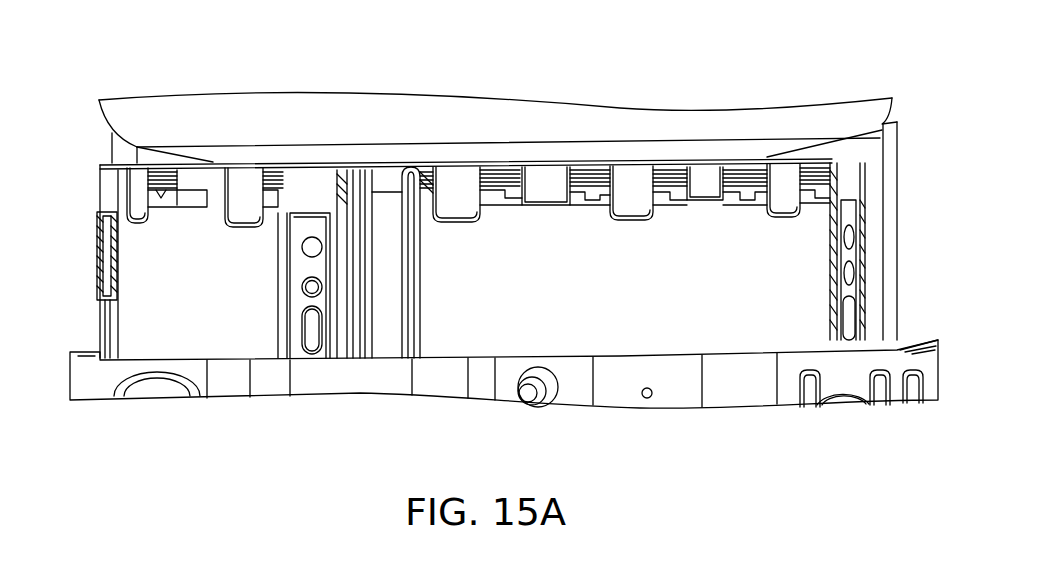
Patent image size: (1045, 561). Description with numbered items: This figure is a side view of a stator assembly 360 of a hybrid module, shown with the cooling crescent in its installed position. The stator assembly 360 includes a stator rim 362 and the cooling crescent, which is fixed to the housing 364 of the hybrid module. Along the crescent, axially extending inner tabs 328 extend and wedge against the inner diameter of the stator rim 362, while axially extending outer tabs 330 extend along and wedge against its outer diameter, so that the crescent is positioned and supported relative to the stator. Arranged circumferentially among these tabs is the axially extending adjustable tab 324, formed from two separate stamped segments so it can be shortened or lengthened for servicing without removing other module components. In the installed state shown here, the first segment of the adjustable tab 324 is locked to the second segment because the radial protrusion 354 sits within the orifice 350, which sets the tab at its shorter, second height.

The stator assembly 360 is at (82, 112).
The axially extending inner tab 328 is at (550, 176).
The axially extending outer tab 330 is at (630, 178).
The radial protrusion 354 is at (875, 246).
The orifice 350 is at (302, 290).
The axially extending adjustable tab 324 is at (262, 340).
The stator rim 362 is at (650, 337).
The housing 364 is at (880, 385).